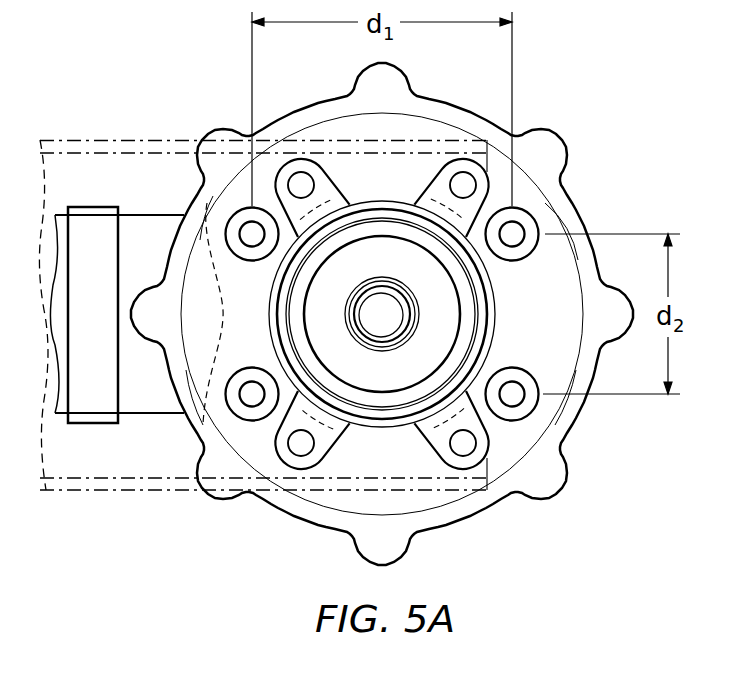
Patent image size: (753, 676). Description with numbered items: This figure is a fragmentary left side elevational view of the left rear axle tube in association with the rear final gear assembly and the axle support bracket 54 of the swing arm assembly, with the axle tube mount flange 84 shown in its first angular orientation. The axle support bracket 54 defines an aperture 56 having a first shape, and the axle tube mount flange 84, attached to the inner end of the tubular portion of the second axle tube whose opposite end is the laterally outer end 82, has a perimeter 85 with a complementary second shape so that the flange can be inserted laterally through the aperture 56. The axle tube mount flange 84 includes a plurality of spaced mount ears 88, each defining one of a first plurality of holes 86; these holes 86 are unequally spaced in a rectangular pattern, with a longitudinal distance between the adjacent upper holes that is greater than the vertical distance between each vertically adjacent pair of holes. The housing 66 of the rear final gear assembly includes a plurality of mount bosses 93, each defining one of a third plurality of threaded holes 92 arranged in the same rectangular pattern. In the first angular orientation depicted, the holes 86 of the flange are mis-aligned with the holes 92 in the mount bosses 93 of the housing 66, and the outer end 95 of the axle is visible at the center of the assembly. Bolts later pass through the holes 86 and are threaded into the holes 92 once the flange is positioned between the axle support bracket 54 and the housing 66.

The axle support bracket 54 is at (128, 138).
The aperture 56 is at (227, 360).
The housing 66 is at (553, 104).
The laterally outer end 82 is at (372, 230).
The axle tube mount flange 84 is at (534, 312).
The perimeter 85 is at (222, 317).
The first plurality of holes 86 is at (250, 234).
The mount ears 88 is at (200, 205).
The third plurality of holes 92 is at (301, 185).
The mount bosses 93 is at (340, 158).
The outer end 95 is at (382, 322).